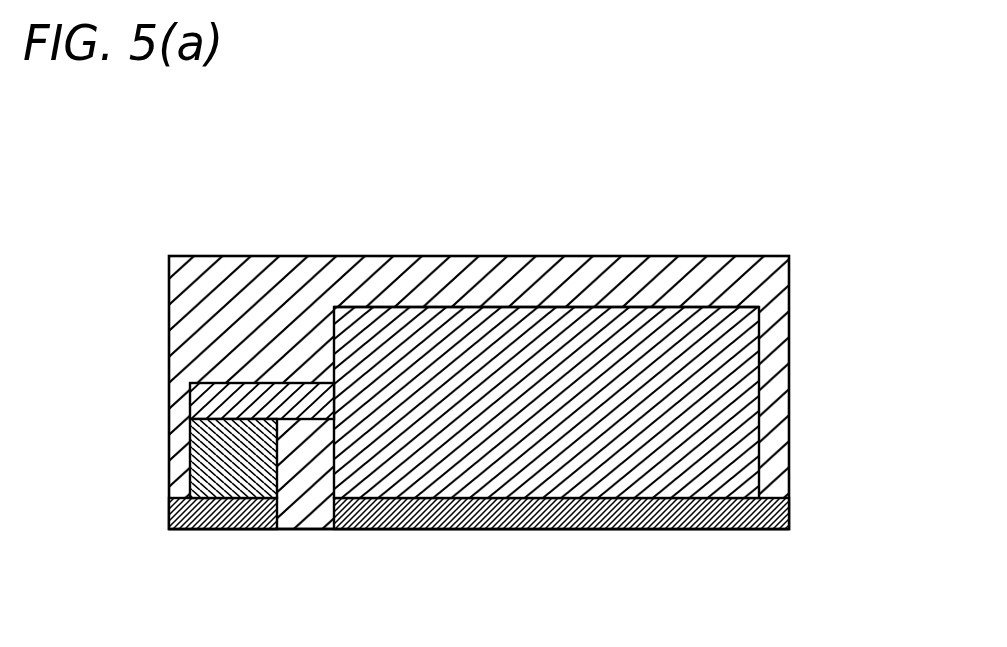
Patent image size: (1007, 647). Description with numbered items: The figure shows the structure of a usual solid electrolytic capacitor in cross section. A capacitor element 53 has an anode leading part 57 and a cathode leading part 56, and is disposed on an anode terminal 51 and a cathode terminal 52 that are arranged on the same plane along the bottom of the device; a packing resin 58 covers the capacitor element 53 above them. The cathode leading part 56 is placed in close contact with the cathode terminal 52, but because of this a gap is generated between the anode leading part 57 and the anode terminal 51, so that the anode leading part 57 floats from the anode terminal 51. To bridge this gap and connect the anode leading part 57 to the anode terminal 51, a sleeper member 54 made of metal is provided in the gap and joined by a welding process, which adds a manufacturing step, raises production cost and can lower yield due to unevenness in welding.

The anode terminal 51 is at (226, 531).
The cathode terminal 52 is at (790, 515).
The capacitor element 53 is at (618, 300).
The sleeper member 54 is at (215, 466).
The cathode leading part 56 is at (720, 356).
The anode leading part 57 is at (245, 398).
The packing resin 58 is at (246, 276).